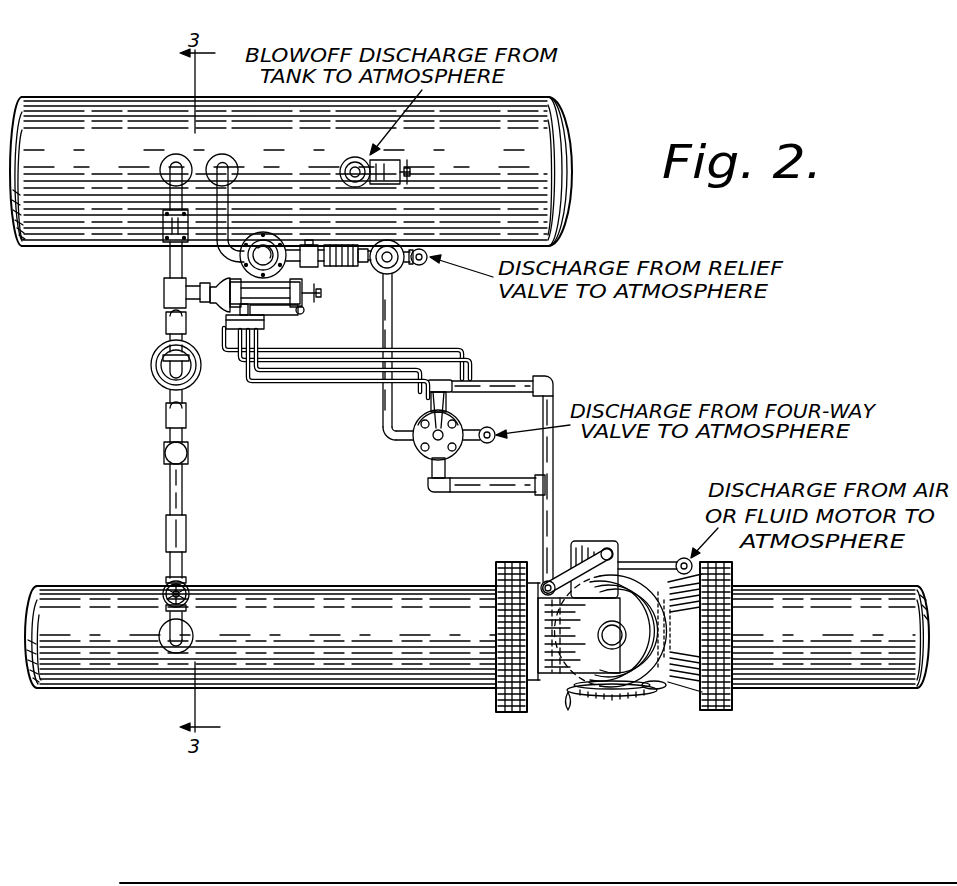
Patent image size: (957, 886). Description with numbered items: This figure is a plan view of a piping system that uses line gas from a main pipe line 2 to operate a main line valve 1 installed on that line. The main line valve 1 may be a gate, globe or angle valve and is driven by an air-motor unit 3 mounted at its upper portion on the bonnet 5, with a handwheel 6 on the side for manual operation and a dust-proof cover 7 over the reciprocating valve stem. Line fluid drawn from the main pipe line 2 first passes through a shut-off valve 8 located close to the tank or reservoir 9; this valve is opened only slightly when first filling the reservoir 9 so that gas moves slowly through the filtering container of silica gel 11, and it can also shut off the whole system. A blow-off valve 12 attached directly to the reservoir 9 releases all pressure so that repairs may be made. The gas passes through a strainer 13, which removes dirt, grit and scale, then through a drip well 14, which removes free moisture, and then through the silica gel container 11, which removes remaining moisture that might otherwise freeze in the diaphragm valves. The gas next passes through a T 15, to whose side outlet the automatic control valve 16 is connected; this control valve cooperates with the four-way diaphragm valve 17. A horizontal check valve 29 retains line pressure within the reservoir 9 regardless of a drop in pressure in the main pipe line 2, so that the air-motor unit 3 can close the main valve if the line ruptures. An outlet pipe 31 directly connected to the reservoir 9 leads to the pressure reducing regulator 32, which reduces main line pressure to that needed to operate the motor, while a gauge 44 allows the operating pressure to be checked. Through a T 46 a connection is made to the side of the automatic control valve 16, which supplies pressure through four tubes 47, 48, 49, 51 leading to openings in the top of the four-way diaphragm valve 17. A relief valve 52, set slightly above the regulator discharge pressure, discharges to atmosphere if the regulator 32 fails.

The main line valve 1 is at (539, 690).
The main pipe line 2 is at (168, 680).
The air-motor unit 3 is at (600, 590).
The bonnet 5 is at (638, 590).
The handwheel 6 is at (653, 690).
The dust-proof cover 7 is at (627, 695).
The shut-off valve 8 is at (166, 588).
The tank or reservoir 9 is at (105, 100).
The filtering container of silica gel 11 is at (152, 365).
The blow-off valve 12 is at (357, 156).
The strainer 13 is at (166, 530).
The drip well 14 is at (160, 452).
The T 15 is at (164, 297).
The automatic control valve 16 is at (220, 283).
The four-way diaphragm valve 17 is at (420, 454).
The horizontal check valve 29 is at (168, 228).
The outlet pipe 31 is at (232, 206).
The pressure reducing regulator 32 is at (268, 233).
The gauge 44 is at (333, 266).
The T 46 is at (312, 244).
The tube 47 is at (418, 398).
The tube 48 is at (459, 362).
The tube 49 is at (386, 427).
The tube 51 is at (472, 369).
The relief valve 52 is at (396, 268).